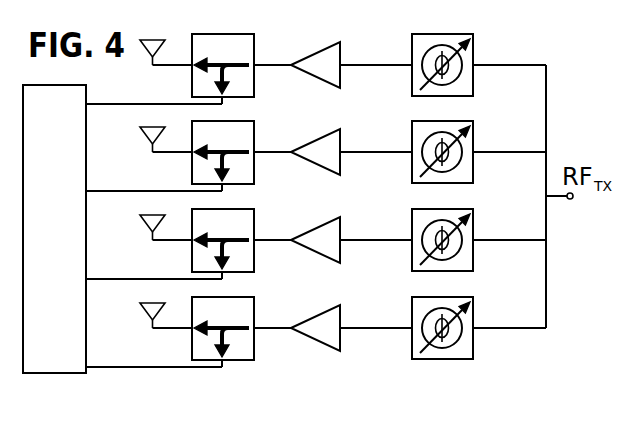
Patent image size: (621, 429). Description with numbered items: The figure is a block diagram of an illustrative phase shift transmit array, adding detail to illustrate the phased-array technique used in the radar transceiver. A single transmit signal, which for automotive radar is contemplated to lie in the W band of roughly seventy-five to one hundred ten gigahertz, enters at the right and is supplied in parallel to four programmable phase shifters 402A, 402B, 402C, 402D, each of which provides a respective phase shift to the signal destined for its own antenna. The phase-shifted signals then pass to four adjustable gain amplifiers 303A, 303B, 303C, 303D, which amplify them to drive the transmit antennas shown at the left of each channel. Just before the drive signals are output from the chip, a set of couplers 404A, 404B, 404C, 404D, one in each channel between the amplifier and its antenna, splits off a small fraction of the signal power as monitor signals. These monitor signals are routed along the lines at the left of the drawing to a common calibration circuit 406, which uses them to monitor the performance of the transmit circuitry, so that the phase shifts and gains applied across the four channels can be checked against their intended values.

The coupler 404A is at (190, 72).
The coupler 404B is at (190, 152).
The coupler 404C is at (190, 240).
The coupler 404D is at (190, 328).
The adjustable gain amplifier 303A is at (331, 83).
The adjustable gain amplifier 303B is at (302, 156).
The adjustable gain amplifier 303C is at (302, 244).
The adjustable gain amplifier 303D is at (302, 332).
The programmable phase shifter 402A is at (411, 73).
The programmable phase shifter 402B is at (413, 152).
The programmable phase shifter 402C is at (413, 240).
The programmable phase shifter 402D is at (413, 328).
The calibration circuit 406 is at (72, 374).